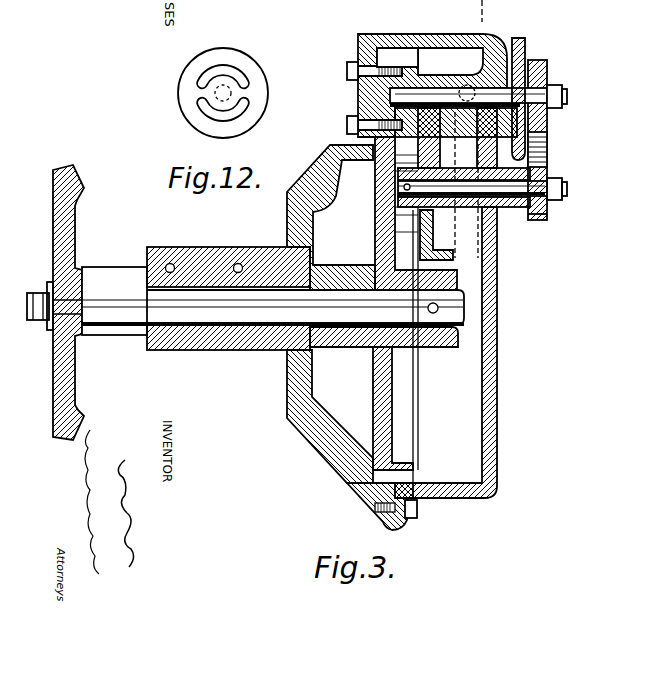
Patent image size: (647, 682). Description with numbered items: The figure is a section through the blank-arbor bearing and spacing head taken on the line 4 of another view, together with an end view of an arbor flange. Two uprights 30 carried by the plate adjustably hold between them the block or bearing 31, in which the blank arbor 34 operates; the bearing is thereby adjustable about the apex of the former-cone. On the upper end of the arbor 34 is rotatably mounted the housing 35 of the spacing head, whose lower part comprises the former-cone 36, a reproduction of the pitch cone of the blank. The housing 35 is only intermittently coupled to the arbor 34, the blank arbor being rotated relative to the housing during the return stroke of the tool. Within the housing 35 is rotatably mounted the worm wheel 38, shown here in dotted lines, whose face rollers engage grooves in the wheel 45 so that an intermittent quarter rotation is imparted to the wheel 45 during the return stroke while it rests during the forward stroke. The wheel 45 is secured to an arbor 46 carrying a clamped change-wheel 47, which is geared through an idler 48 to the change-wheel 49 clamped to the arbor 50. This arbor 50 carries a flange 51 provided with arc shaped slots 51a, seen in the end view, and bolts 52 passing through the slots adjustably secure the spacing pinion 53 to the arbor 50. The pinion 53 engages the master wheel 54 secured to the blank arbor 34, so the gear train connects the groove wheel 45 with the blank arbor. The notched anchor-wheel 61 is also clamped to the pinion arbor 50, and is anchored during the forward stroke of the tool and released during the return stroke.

In FIG. 3, the section line 4 is at (478, 500).
In FIG. 3, the uprights 30 is at (75, 373).
In FIG. 3, the block or bearing 31 is at (260, 350).
In FIG. 3, the arbor 34 is at (205, 314).
In FIG. 3, the housing 35 is at (497, 473).
In FIG. 3, the former-cone 36 is at (338, 467).
In FIG. 3, the worm wheel 38 is at (468, 255).
In FIG. 3, the wheel 45 is at (450, 254).
In FIG. 3, the arbor 46 is at (563, 189).
In FIG. 3, the change-wheel 47 is at (550, 212).
In FIG. 3, the idler 48 is at (550, 147).
In FIG. 3, the change-wheel 49 is at (550, 121).
In FIG. 3, the arbor 50 is at (563, 97).
In FIG. 12, the flange 51 is at (266, 95).
In FIG. 3, the flange 51 is at (358, 95).
In FIG. 12, the arc shaped slots 51a is at (241, 70).
In FIG. 3, the bolts 52 is at (347, 68).
In FIG. 3, the spacing pinion 53 is at (393, 64).
In FIG. 3, the master wheel 54 is at (378, 188).
In FIG. 3, the anchor-wheel 61 is at (515, 36).